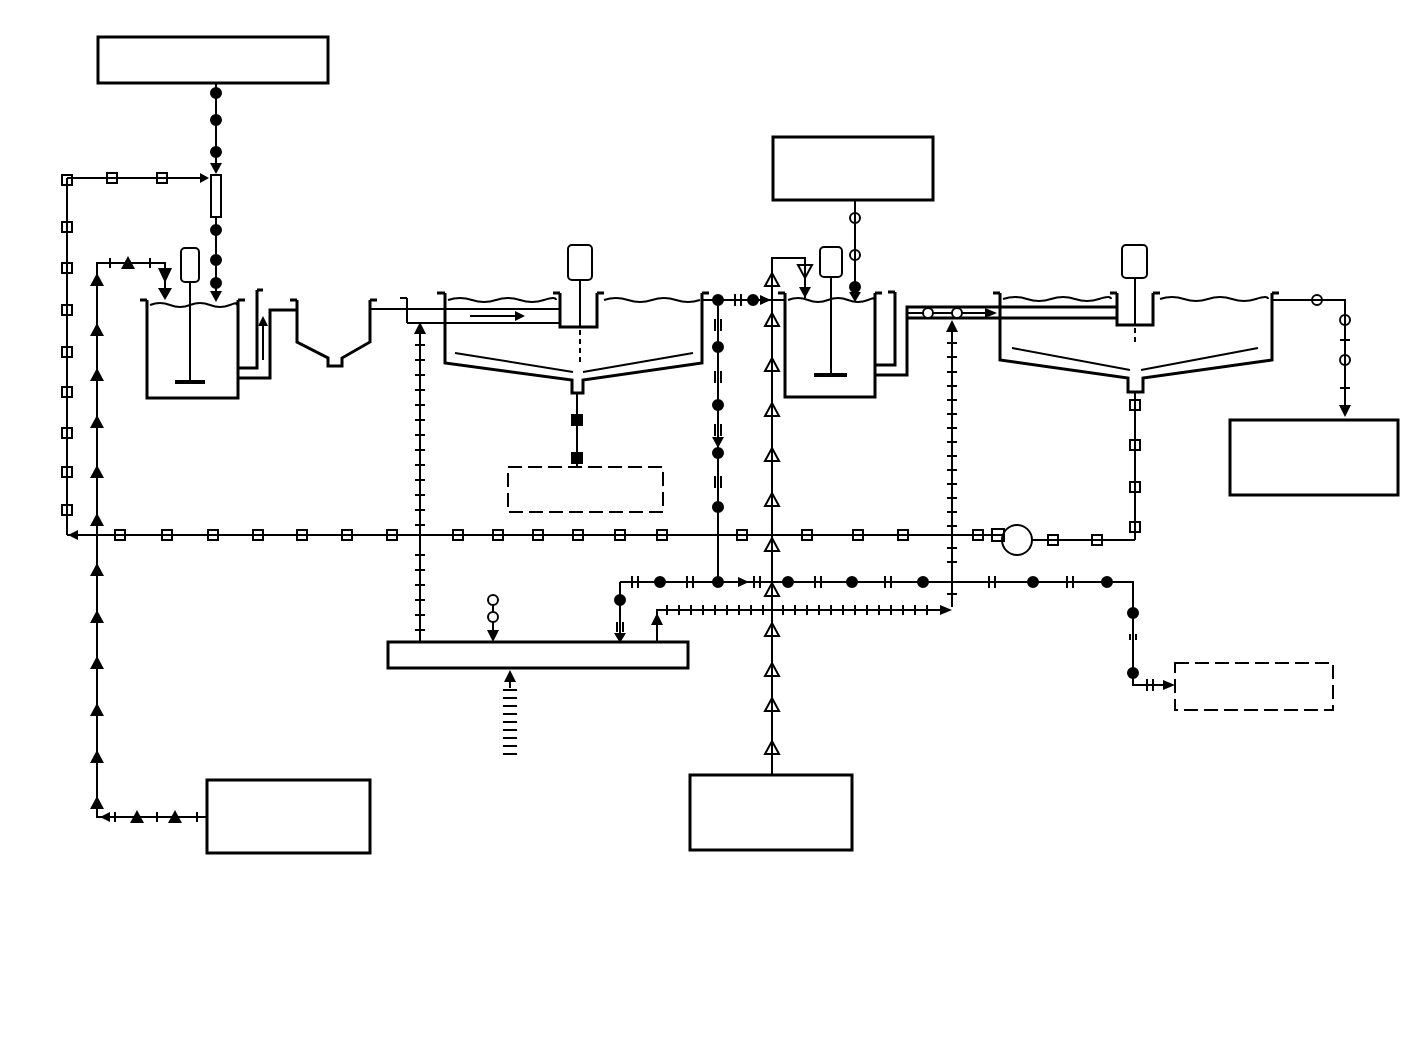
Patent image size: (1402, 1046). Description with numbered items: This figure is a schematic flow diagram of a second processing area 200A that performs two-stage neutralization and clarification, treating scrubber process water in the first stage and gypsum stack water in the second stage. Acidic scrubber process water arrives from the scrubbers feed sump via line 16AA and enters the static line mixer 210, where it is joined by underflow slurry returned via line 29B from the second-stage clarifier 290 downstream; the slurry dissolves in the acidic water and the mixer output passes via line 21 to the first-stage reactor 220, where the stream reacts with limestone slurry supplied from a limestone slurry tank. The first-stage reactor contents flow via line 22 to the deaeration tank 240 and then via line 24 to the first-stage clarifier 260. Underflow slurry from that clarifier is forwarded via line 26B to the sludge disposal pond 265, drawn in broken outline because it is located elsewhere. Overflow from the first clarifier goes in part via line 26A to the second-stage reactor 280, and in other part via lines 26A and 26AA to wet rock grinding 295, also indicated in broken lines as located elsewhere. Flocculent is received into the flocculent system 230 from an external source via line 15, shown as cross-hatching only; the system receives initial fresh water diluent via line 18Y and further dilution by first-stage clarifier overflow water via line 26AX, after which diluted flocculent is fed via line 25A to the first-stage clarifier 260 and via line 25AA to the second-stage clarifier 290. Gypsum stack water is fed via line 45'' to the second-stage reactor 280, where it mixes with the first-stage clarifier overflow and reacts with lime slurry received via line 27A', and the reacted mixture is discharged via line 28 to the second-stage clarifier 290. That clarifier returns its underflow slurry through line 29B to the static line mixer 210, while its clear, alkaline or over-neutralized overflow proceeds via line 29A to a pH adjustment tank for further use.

The second processing area 200A is at (665, 236).
The line 16AA is at (222, 93).
The static line mixer 210 is at (207, 200).
The line 21 is at (210, 236).
The line 29B is at (147, 182).
The stage 1 reactor 220 is at (147, 400).
The line 22 is at (272, 372).
The deaeration tank 240 is at (357, 352).
The line 24 is at (490, 308).
The stage 1 clarifier 260 is at (507, 375).
The line 26B is at (573, 420).
The sludge disposal pond 265 is at (527, 468).
The line 26A is at (737, 262).
The line 26AA is at (715, 378).
The line 26AX is at (620, 582).
The line 25A is at (420, 575).
The line 18Y is at (500, 603).
The flocculent system 230 is at (400, 670).
The line 15 is at (515, 712).
The line 25AA is at (800, 612).
The line 27A' is at (771, 537).
The line 45'' is at (860, 219).
The line 28 is at (943, 303).
The stage 2 reactor 280 is at (877, 398).
The stage 2 clarifier 290 is at (1070, 372).
The line 29A is at (1340, 298).
The wet rock grinding 295 is at (1172, 690).